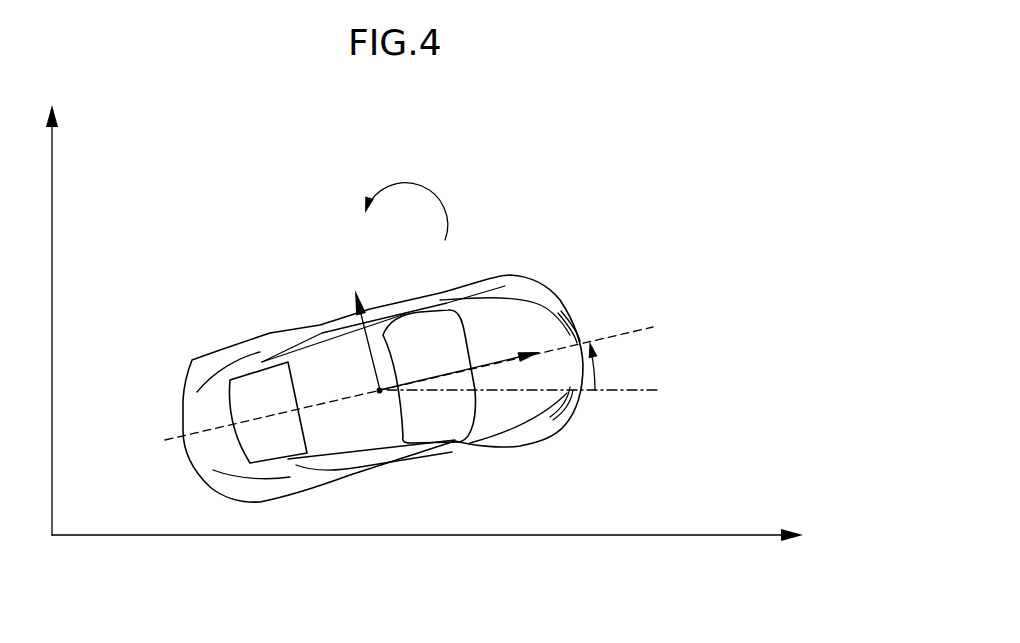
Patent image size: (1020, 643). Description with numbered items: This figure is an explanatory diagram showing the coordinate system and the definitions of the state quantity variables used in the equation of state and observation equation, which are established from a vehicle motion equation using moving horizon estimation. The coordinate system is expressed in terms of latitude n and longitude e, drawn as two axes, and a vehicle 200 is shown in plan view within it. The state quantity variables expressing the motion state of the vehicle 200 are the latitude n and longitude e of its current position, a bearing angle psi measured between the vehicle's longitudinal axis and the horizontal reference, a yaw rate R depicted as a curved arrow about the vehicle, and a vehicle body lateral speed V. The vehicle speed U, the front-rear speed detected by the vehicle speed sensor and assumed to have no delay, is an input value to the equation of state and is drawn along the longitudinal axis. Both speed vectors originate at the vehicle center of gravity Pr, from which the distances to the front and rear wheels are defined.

The vehicle 200 is at (558, 295).
The latitude n is at (52, 298).
The longitude e is at (443, 534).
The yaw rate R is at (406, 196).
The vehicle center of gravity Pr is at (369, 411).
The vehicle body lateral speed V is at (358, 324).
The vehicle speed U is at (460, 355).
The bearing angle psi is at (612, 366).